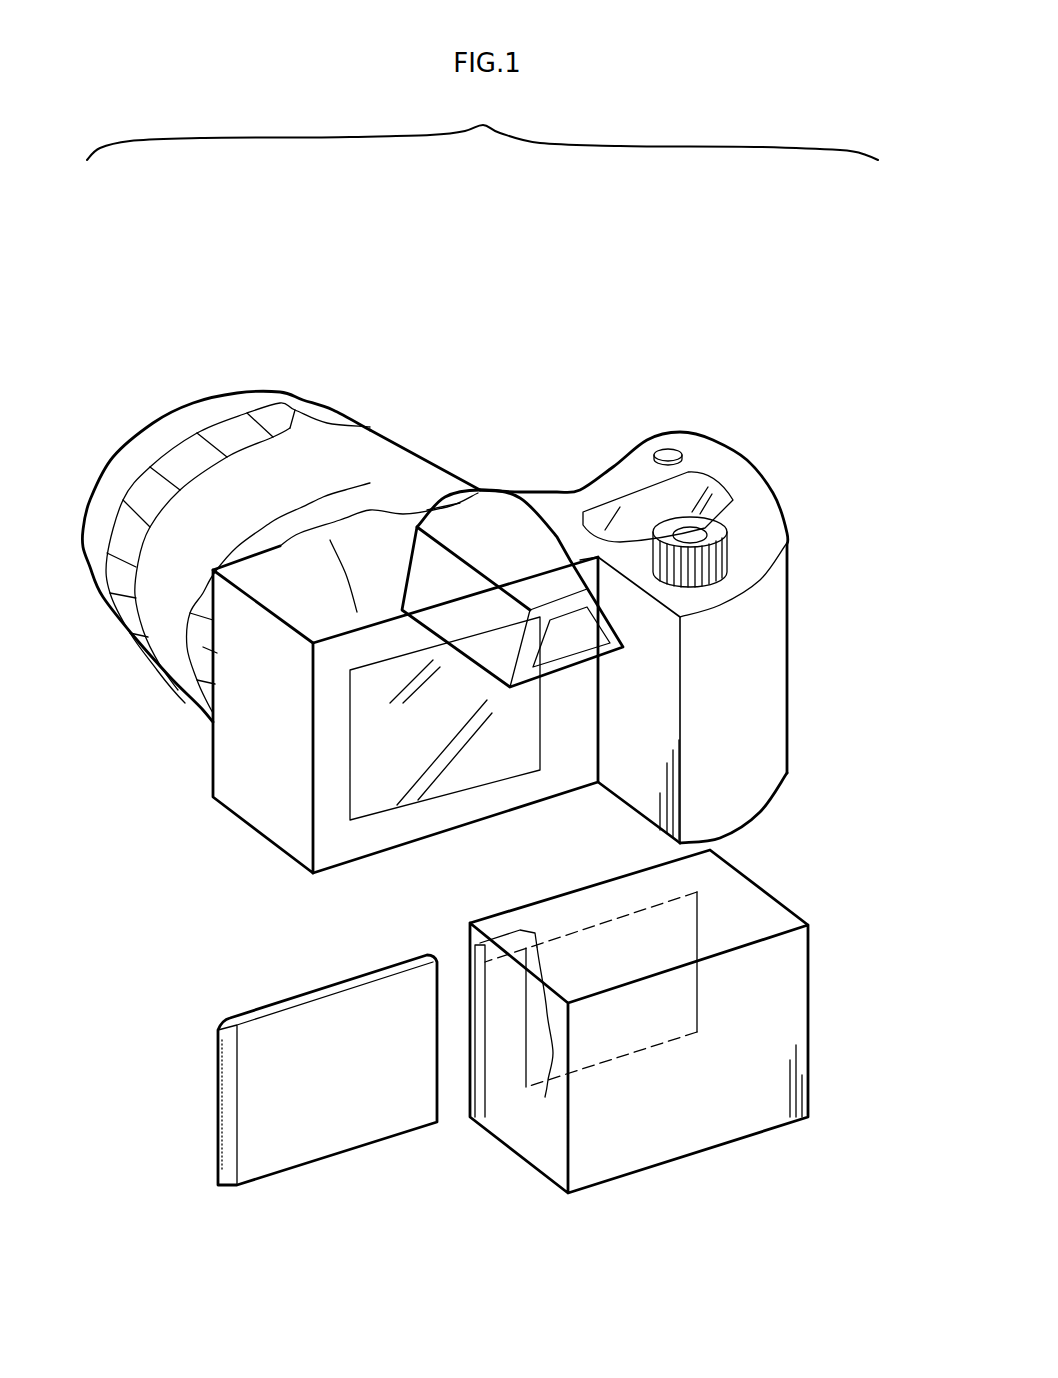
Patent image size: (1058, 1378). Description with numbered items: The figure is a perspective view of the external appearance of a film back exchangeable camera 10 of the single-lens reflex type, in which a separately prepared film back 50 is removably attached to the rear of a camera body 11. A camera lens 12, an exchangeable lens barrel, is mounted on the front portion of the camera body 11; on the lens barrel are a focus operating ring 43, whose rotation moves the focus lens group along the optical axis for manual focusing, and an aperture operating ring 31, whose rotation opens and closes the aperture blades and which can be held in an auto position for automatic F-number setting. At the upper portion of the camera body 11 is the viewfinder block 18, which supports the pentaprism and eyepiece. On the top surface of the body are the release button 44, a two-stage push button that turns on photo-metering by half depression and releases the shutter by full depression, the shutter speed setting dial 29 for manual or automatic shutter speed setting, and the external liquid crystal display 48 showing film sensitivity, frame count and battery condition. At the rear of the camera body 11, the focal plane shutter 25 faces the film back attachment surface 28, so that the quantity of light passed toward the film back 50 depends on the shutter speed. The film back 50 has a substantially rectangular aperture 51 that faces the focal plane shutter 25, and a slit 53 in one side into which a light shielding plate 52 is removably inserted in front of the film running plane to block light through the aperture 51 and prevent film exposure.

The film back exchangeable camera 10 is at (750, 251).
The camera body 11 is at (263, 803).
The camera lens 12 is at (388, 457).
The viewfinder block 18 is at (487, 515).
The focal plane shutter 25 is at (487, 767).
The film back attachment surface 28 is at (343, 850).
The shutter speed setting dial 29 is at (717, 567).
The aperture operating ring 31 is at (208, 690).
The focus operating ring 43 is at (330, 420).
The release button 44 is at (667, 447).
The external liquid crystal display 48 is at (690, 487).
The film back 50 is at (700, 1037).
The aperture 51 is at (686, 905).
The light shielding plate 52 is at (335, 1135).
The slit 53 is at (495, 1103).